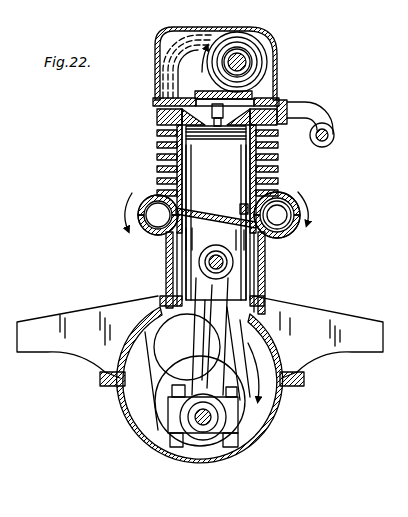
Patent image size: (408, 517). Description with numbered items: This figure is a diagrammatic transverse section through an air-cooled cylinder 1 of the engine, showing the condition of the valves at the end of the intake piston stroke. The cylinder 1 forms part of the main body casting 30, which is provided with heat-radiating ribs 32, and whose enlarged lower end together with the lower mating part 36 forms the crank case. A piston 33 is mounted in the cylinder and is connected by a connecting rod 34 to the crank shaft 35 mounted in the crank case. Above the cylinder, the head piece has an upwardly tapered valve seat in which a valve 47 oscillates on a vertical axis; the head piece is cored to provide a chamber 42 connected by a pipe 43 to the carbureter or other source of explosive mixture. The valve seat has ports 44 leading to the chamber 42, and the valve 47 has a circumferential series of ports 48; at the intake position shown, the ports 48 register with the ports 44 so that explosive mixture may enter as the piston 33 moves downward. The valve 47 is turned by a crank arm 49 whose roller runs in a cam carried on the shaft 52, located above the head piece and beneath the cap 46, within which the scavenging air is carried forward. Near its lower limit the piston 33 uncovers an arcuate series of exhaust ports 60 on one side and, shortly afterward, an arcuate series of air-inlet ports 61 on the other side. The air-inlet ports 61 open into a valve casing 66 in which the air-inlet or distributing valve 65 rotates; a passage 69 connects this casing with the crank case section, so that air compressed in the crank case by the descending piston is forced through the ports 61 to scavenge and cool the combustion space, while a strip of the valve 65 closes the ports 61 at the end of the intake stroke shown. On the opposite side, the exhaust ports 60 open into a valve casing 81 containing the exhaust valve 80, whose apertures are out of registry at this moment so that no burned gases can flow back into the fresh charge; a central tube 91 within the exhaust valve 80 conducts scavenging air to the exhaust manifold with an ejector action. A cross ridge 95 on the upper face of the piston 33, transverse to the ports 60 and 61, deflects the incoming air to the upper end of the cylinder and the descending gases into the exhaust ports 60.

The cylinder 1 is at (172, 157).
The main body casting 30 is at (168, 288).
The heat-radiating ribs 32 is at (272, 152).
The piston 33 is at (233, 265).
The connecting rod 34 is at (215, 302).
The crank shaft 35 is at (200, 423).
The lower mating part 36 is at (272, 423).
The chamber 42 is at (283, 108).
The pipe 43 is at (334, 135).
The ports 44 is at (192, 105).
The cap 46 is at (265, 67).
The valve 47 is at (229, 132).
The ports 48 is at (192, 122).
The crank arm 49 is at (242, 93).
The shaft 52 is at (239, 60).
The exhaust ports 60 is at (243, 206).
The air-inlet ports 61 is at (186, 215).
The air-inlet or distributing valve 65 is at (152, 207).
The valve casing 66 is at (154, 234).
The passage 69 is at (176, 257).
The exhaust valve 80 is at (281, 204).
The valve casing 81 is at (288, 230).
The central tube 91 is at (284, 221).
The cross ridge 95 is at (208, 212).